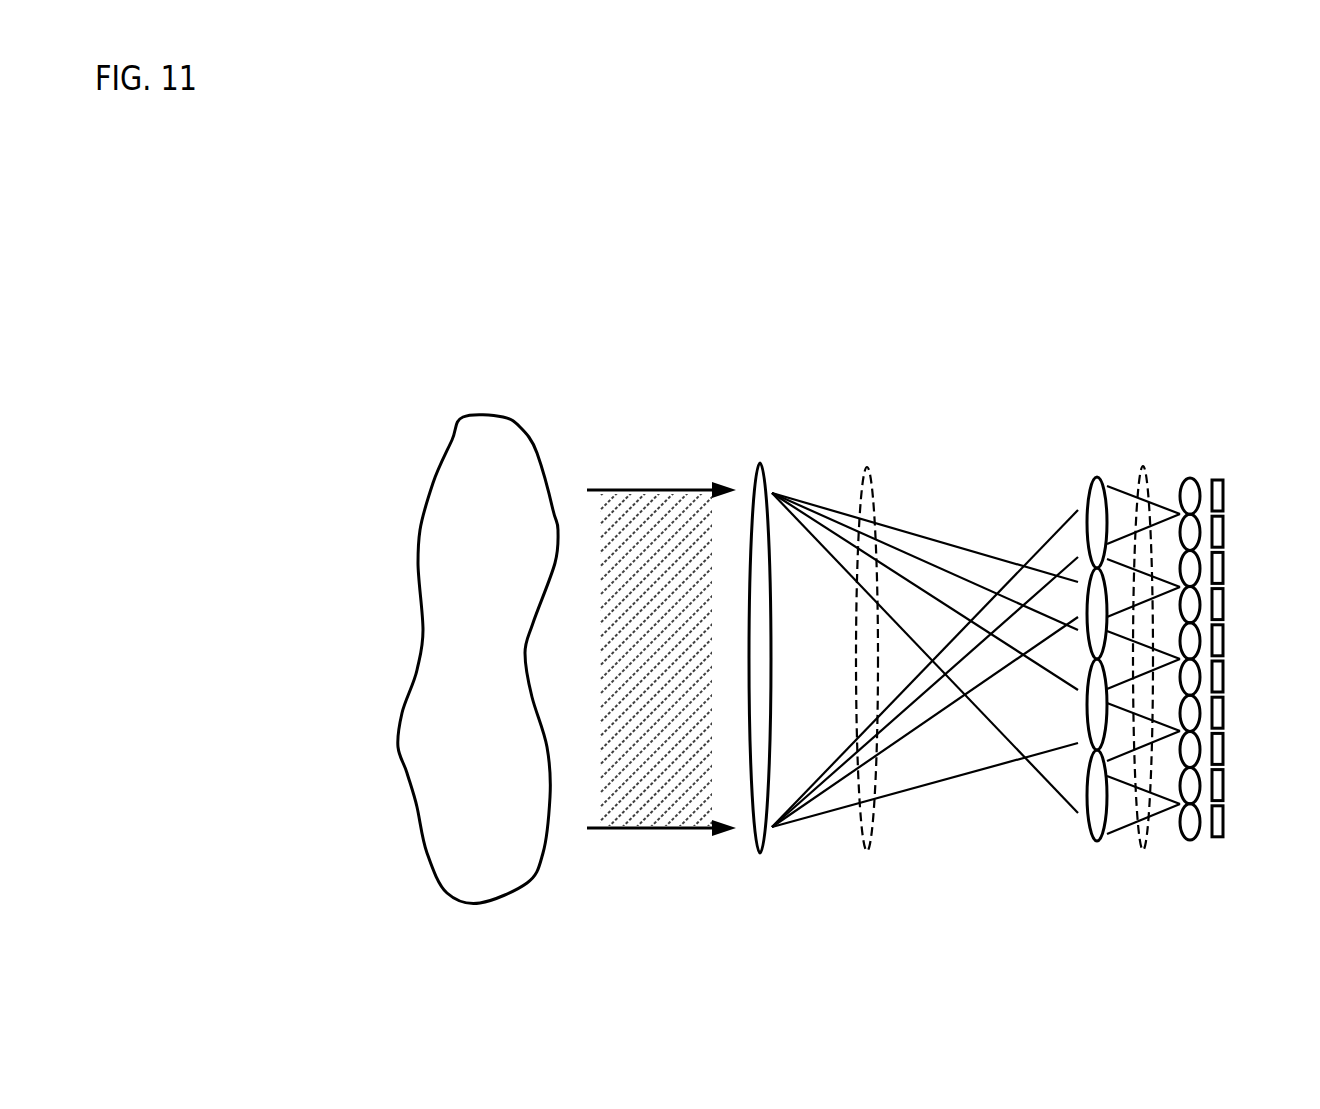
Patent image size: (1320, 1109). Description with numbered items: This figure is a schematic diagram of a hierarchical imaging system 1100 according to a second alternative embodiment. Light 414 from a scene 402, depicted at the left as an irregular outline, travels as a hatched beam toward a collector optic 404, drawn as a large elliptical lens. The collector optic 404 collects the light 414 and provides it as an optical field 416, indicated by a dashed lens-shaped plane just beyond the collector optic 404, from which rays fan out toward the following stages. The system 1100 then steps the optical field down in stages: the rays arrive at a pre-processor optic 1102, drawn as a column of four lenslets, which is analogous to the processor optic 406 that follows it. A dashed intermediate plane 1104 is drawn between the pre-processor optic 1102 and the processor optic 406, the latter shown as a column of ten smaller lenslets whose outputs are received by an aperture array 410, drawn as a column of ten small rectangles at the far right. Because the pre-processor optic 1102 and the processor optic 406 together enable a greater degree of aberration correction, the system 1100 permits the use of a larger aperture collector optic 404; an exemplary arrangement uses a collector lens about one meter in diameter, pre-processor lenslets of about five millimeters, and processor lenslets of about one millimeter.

The system 1100 is at (338, 213).
The scene 402 is at (502, 418).
The collector optic 404 is at (758, 462).
The light 414 is at (648, 862).
The optical field 416 is at (867, 467).
The pre-processor optic 1102 is at (1100, 878).
The intermediate image plane 1104 is at (1143, 467).
The processor optic 406 is at (1180, 418).
The aperture array 410 is at (1219, 443).